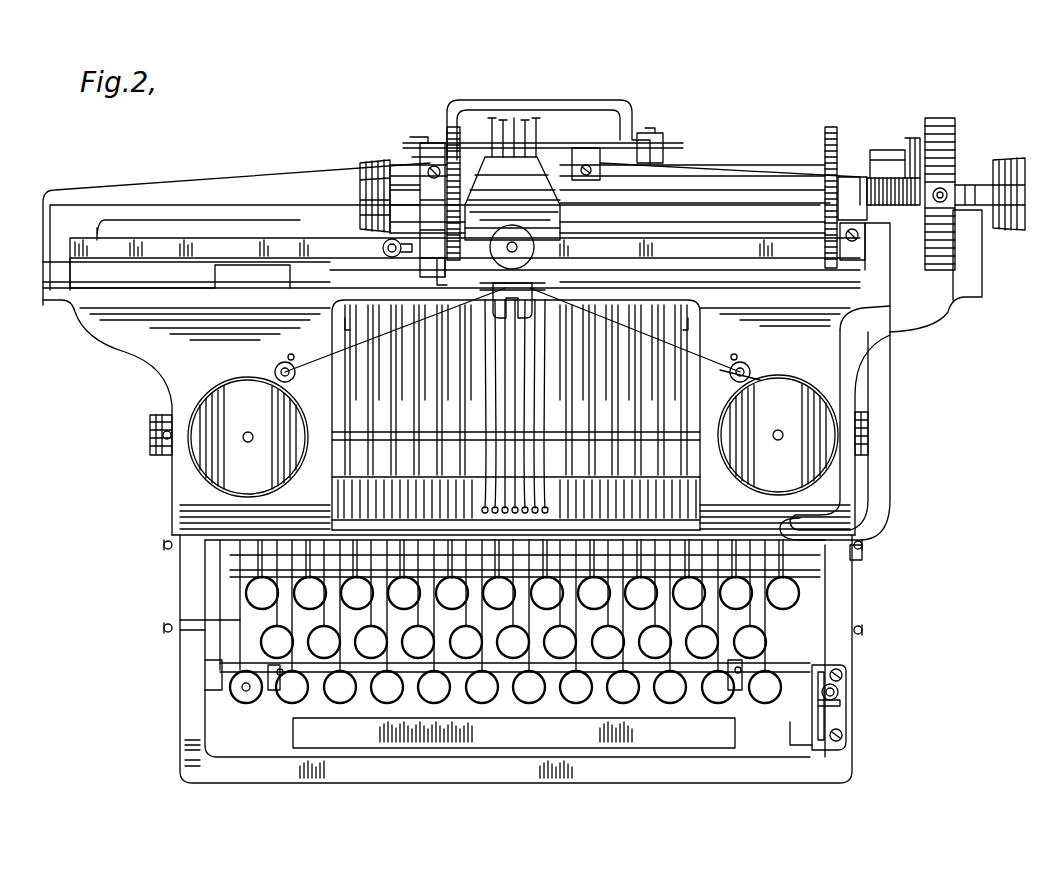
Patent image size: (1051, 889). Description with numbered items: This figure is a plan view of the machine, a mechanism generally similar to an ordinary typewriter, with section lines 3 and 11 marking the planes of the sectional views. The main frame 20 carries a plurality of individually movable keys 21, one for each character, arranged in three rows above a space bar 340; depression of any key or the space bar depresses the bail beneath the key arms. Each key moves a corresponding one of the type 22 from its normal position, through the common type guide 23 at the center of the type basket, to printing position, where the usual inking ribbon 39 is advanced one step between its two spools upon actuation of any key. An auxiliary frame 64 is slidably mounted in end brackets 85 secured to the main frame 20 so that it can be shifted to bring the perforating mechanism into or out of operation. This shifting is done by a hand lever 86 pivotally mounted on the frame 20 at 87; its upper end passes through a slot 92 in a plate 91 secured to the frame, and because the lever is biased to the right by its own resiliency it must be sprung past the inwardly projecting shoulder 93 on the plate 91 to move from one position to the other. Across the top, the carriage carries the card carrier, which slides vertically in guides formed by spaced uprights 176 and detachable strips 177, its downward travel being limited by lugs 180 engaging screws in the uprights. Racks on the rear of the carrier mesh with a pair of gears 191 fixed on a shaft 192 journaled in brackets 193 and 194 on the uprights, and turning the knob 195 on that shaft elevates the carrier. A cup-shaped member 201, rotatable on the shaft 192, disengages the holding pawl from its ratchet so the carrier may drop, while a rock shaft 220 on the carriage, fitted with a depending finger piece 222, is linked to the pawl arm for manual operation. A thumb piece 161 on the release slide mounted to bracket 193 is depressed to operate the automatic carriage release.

The section line 3- 3 is at (548, 72).
The section line 11- 11 is at (470, 48).
The frame 20 is at (835, 600).
The keys 21 is at (770, 700).
The type 22 is at (550, 508).
The type guide 23 is at (465, 296).
The inking ribbon 39 is at (705, 356).
The auxiliary frame 64 is at (230, 600).
The end brackets 85 is at (175, 612).
The hand lever 86 is at (840, 690).
The pivot of hand lever 87 is at (228, 677).
The plate 91 is at (838, 713).
The slot 92 is at (810, 715).
The shoulder 93 is at (832, 705).
The thumb piece 161 is at (383, 250).
The uprights 176 is at (420, 264).
The plates or strips 177 is at (428, 265).
The lugs 180 is at (468, 262).
The gears 191 is at (447, 130).
The shaft 192 is at (710, 193).
The bracket 193 is at (432, 203).
The bracket 194 is at (848, 195).
The knob 195 is at (372, 164).
The cup-shaped member 201 is at (940, 128).
The rock shaft 220 is at (882, 415).
The finger piece 222 is at (858, 556).
The space bar 340 is at (514, 748).